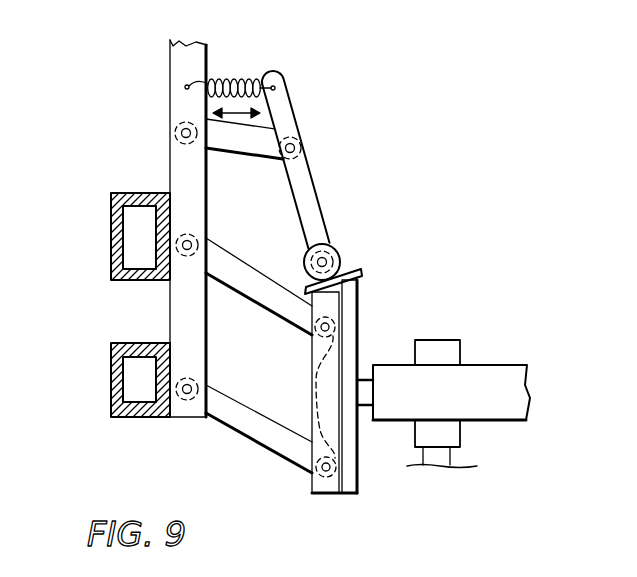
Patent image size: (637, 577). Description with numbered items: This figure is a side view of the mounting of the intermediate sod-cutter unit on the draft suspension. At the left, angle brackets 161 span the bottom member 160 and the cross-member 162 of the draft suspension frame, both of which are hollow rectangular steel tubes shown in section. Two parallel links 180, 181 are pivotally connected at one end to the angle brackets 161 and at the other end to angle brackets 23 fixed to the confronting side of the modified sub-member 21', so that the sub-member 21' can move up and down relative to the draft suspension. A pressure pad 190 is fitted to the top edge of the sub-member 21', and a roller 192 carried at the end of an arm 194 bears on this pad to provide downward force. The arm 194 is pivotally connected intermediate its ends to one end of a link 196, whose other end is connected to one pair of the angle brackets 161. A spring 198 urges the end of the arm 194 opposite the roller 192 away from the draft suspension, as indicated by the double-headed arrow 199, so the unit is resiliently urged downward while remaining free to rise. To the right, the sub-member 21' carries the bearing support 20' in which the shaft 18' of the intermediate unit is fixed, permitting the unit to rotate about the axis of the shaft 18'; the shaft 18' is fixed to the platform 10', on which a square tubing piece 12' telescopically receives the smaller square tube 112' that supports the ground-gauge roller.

The platform 10' is at (487, 392).
The square cross-section tubing piece 12' is at (465, 342).
The smaller square tube 112' is at (474, 445).
The shaft 18' is at (383, 362).
The bearing support 20' is at (294, 397).
The sub-member 21' is at (375, 386).
The angle brackets 23 is at (323, 495).
The bottom member 160 is at (145, 418).
The angle brackets 161 is at (168, 165).
The cross-member 162 is at (111, 235).
The parallel link 180 is at (275, 446).
The parallel link 181 is at (271, 283).
The pressure pad 190 is at (360, 273).
The roller 192 is at (338, 255).
The arm 194 is at (315, 213).
The link 196 is at (241, 153).
The spring 198 is at (236, 86).
The double-headed arrow 199 is at (300, 131).